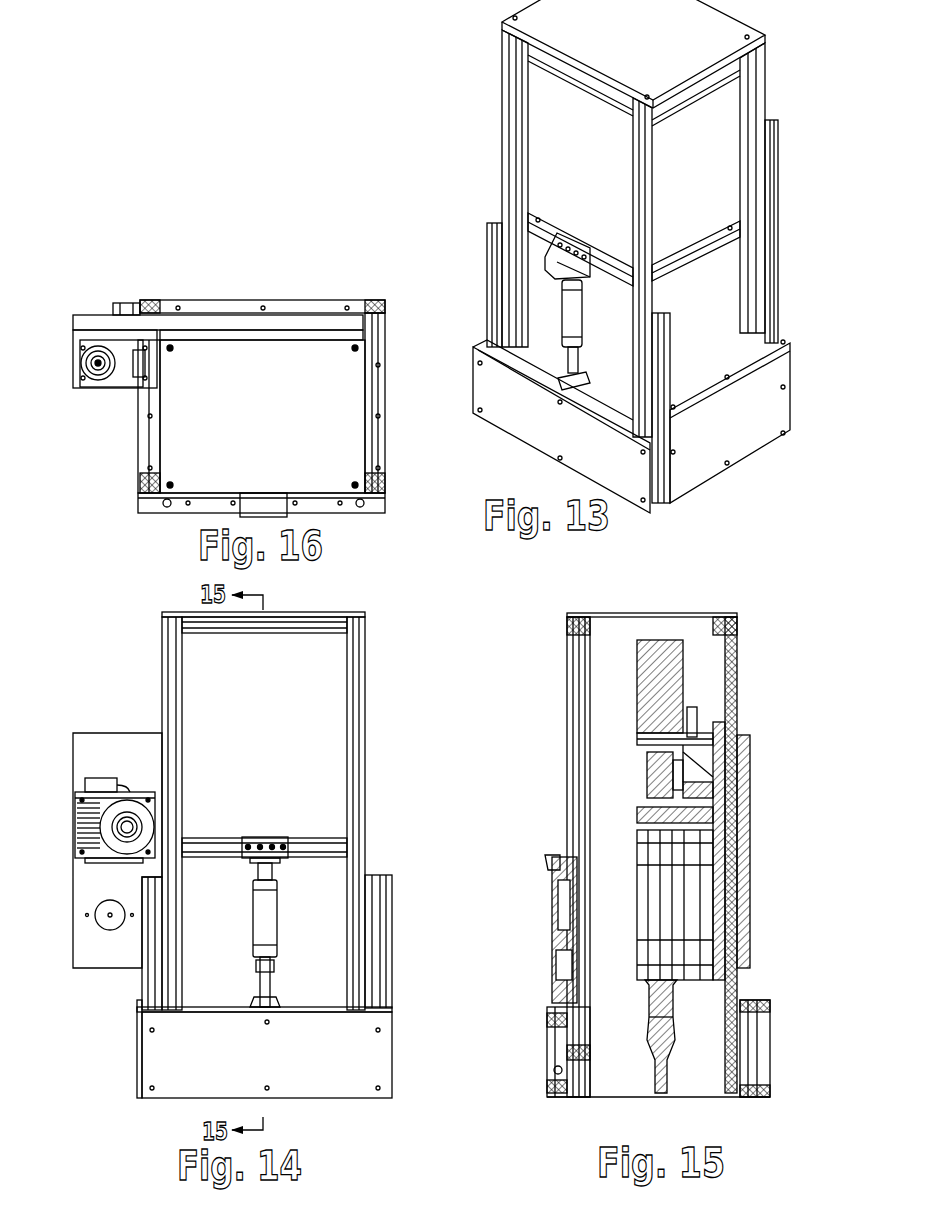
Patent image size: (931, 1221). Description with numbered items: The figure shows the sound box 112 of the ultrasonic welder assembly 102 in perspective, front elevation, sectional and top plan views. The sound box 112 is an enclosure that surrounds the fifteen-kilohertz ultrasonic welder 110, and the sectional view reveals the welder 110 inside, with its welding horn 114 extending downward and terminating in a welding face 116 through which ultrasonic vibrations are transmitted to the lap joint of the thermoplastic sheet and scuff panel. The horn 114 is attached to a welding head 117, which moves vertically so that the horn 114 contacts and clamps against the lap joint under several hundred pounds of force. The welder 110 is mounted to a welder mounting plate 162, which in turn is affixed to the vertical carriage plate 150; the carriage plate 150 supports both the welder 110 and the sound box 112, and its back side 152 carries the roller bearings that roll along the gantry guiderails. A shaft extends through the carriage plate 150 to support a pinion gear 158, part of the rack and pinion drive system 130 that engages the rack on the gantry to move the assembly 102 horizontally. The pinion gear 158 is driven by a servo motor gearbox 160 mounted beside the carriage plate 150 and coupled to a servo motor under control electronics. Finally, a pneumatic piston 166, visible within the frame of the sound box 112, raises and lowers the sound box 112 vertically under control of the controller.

In FIG. 14, the ultrasonic welder assembly 102 is at (102, 663).
In FIG. 15, the ultrasonic welder 110 is at (643, 762).
In FIG. 13, the sound box 112 is at (495, 200).
In FIG. 16, the sound box 112 is at (338, 520).
In FIG. 14, the sound box 112 is at (293, 1060).
In FIG. 15, the sound box 112 is at (542, 1045).
In FIG. 15, the welding horn 114 is at (653, 1067).
In FIG. 15, the welding face 116 is at (660, 1093).
In FIG. 15, the welding head 117 is at (647, 1003).
In FIG. 16, the rack and pinion drive system 130 is at (114, 393).
In FIG. 14, the rack and pinion drive system 130 is at (112, 858).
In FIG. 16, the carriage plate 150 is at (218, 325).
In FIG. 14, the carriage plate 150 is at (93, 948).
In FIG. 15, the carriage plate 150 is at (743, 850).
In FIG. 15, the back side 152 is at (750, 803).
In FIG. 16, the pinion gear 158 is at (120, 302).
In FIG. 16, the servo motor gearbox 160 is at (85, 364).
In FIG. 14, the servo motor gearbox 160 is at (102, 775).
In FIG. 15, the welder mounting plate 162 is at (733, 697).
In FIG. 13, the pneumatic piston 166 is at (565, 312).
In FIG. 14, the pneumatic piston 166 is at (267, 907).
In FIG. 15, the pneumatic piston 166 is at (552, 913).